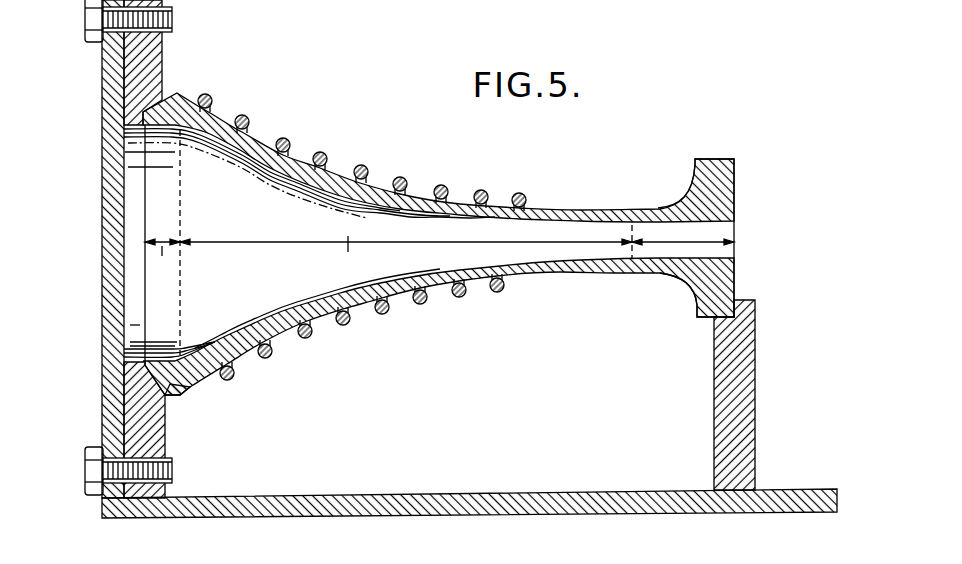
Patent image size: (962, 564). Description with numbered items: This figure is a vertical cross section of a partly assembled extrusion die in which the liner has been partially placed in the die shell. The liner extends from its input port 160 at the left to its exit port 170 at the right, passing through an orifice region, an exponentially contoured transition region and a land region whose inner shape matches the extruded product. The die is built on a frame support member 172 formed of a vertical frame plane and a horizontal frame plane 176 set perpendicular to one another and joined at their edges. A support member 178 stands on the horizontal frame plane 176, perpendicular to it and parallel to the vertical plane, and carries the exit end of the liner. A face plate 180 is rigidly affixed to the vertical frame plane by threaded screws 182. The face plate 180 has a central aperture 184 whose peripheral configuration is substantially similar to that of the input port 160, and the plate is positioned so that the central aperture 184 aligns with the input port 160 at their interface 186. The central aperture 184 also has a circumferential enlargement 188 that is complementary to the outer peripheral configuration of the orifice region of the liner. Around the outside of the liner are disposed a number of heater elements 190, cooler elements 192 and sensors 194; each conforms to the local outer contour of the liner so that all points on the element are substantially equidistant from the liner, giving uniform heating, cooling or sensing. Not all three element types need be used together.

The input port 160 is at (166, 212).
The exit port 170 is at (740, 229).
The frame support member 172 is at (108, 101).
The horizontal frame plane 176 is at (431, 495).
The support member 178 is at (718, 386).
The face plate 180 is at (135, 411).
The threaded screws 182 is at (86, 19).
The central aperture 184 is at (135, 327).
The interface 186 is at (144, 293).
The circumferential enlargement 188 is at (187, 385).
The heater elements 190 is at (207, 95).
The cooler elements 192 is at (246, 116).
The sensors 194 is at (285, 139).